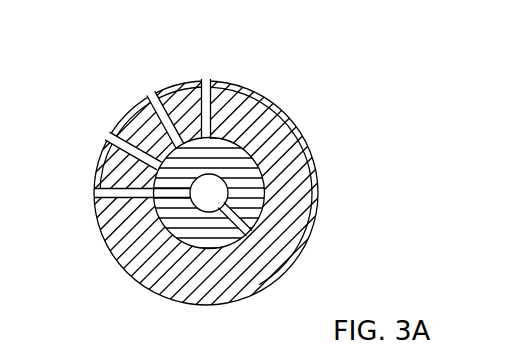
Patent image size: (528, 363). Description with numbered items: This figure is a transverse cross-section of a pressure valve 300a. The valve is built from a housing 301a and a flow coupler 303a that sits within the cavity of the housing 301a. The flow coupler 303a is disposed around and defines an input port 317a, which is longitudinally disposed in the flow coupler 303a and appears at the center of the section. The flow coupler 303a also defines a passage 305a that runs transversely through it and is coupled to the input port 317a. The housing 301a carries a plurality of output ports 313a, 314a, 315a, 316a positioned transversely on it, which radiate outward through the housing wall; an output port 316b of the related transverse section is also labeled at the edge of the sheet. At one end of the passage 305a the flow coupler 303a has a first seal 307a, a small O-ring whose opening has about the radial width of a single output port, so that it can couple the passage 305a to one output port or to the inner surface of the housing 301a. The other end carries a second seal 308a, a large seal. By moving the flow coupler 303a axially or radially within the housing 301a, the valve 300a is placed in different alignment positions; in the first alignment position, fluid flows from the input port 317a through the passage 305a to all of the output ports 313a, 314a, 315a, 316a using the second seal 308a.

The pressure valve 300a is at (391, 107).
The housing 301a is at (277, 255).
The flow coupler 303a is at (240, 162).
The passage 305a is at (192, 178).
The first seal 307a is at (252, 241).
The second seal 308a is at (228, 142).
The output port 313a is at (95, 194).
The output port 314a is at (108, 138).
The output port 315a is at (153, 91).
The output port 316a is at (211, 76).
The output port 316b is at (237, 362).
The input port 317a is at (209, 192).